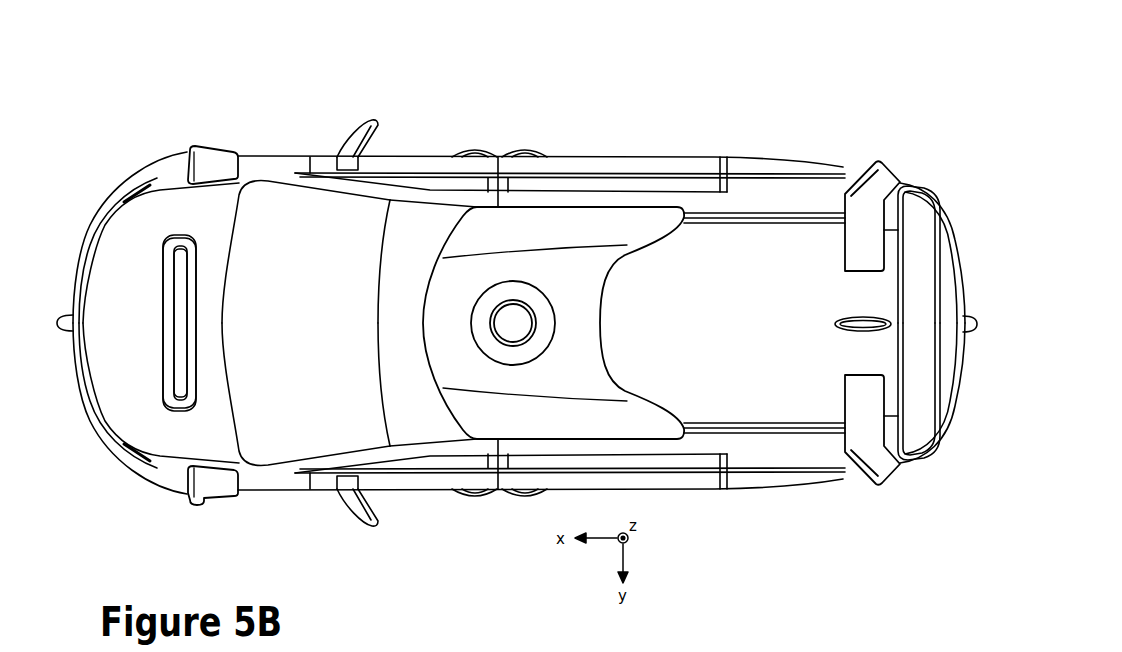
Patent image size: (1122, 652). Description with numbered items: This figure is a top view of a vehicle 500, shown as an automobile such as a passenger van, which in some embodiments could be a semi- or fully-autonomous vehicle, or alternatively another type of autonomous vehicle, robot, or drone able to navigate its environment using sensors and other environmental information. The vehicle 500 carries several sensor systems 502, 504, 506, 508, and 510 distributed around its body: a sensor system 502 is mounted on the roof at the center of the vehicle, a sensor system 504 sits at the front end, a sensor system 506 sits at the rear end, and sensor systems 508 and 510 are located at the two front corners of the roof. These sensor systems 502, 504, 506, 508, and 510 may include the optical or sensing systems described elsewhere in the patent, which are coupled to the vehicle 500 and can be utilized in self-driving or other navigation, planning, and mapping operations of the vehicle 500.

The vehicle 500 is at (863, 76).
The sensor system 502 is at (523, 283).
The sensor system 504 is at (67, 313).
The sensor system 506 is at (967, 317).
The sensor system 508 is at (197, 143).
The sensor system 510 is at (200, 505).